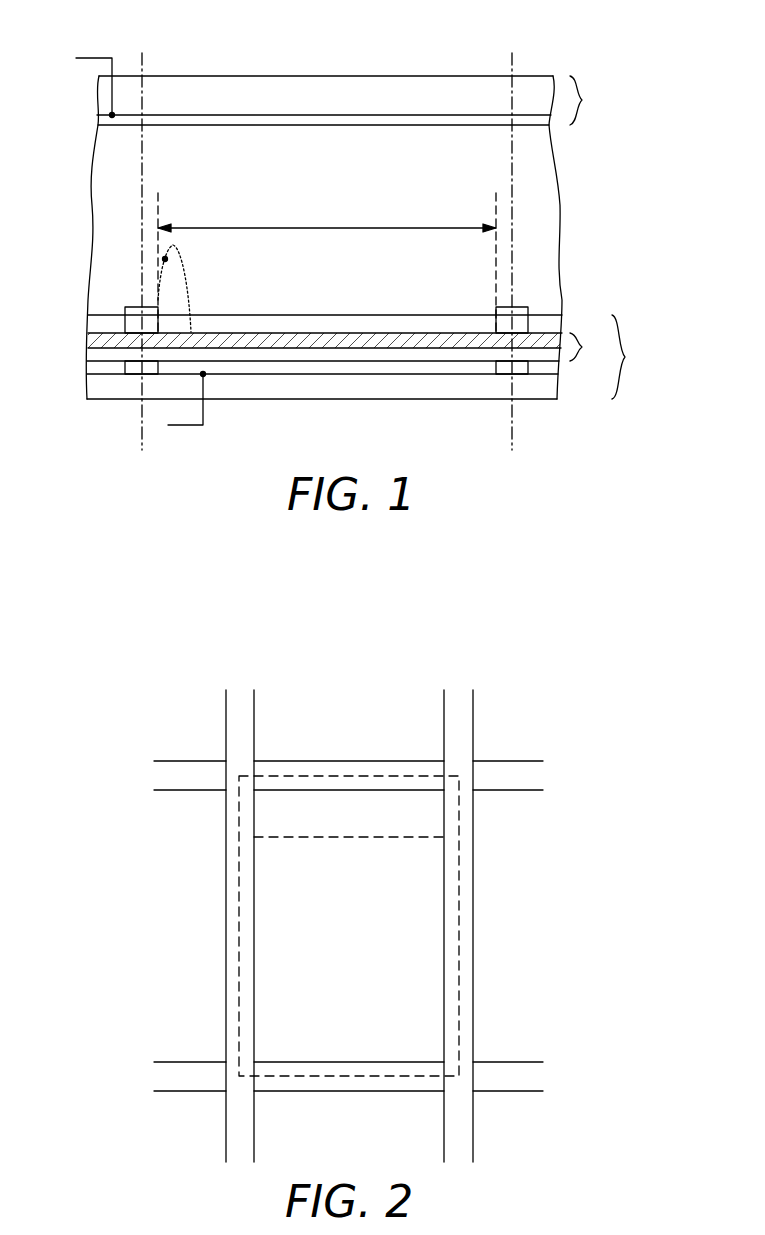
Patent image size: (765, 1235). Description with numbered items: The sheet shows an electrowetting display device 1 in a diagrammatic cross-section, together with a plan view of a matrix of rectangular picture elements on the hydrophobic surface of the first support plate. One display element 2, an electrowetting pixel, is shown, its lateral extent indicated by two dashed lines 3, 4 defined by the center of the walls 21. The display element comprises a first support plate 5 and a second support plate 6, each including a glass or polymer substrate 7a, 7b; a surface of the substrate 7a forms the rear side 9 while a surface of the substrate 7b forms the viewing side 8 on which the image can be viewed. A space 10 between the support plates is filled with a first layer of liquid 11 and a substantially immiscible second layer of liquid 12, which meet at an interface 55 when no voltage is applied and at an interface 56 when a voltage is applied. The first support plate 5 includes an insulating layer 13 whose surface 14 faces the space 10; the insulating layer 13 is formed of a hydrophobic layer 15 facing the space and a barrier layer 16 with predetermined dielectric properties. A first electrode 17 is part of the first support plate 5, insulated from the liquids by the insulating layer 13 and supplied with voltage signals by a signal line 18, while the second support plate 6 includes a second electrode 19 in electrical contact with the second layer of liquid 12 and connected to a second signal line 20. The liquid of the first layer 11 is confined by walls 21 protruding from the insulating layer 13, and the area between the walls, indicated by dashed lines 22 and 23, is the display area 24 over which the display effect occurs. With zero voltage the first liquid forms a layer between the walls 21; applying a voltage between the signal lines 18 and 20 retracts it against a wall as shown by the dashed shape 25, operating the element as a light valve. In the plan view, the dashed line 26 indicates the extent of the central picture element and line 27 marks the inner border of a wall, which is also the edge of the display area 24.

In FIG. 1, the electrowetting display device 1 is at (625, 53).
In FIG. 1, the display element 2 is at (327, 38).
In FIG. 1, the dashed line 3 is at (142, 60).
In FIG. 1, the dashed line 4 is at (512, 60).
In FIG. 1, the first support plate 5 is at (629, 357).
In FIG. 1, the second support plate 6 is at (586, 100).
In FIG. 1, the substrate 7a is at (537, 390).
In FIG. 1, the substrate 7b is at (458, 90).
In FIG. 1, the viewing side 8 is at (229, 75).
In FIG. 1, the rear side 9 is at (290, 400).
In FIG. 1, the space 10 is at (385, 140).
In FIG. 1, the first layer of liquid 11 is at (462, 323).
In FIG. 1, the second layer of liquid 12 is at (557, 200).
In FIG. 1, the insulating layer 13 is at (348, 347).
In FIG. 1, the surface 14 is at (370, 333).
In FIG. 1, the layer 15 is at (323, 345).
In FIG. 1, the barrier layer 16 is at (277, 352).
In FIG. 1, the first electrode 17 is at (393, 368).
In FIG. 1, the signal line 18 is at (187, 430).
In FIG. 1, the second electrode 19 is at (128, 122).
In FIG. 1, the second signal line 20 is at (93, 58).
In FIG. 1, the walls 21 is at (133, 318).
In FIG. 1, the dashed line 22 is at (496, 197).
In FIG. 1, the dashed line 23 is at (158, 197).
In FIG. 1, the display area 24 is at (327, 215).
In FIG. 2, the display area 24 is at (363, 897).
In FIG. 1, the dashed shape 25 is at (165, 259).
In FIG. 2, the dashed shape 25 is at (287, 840).
In FIG. 2, the dashed line 26 is at (459, 890).
In FIG. 2, the line 27 is at (444, 945).
In FIG. 1, the interface 55 is at (415, 315).
In FIG. 1, the interface 56 is at (190, 282).